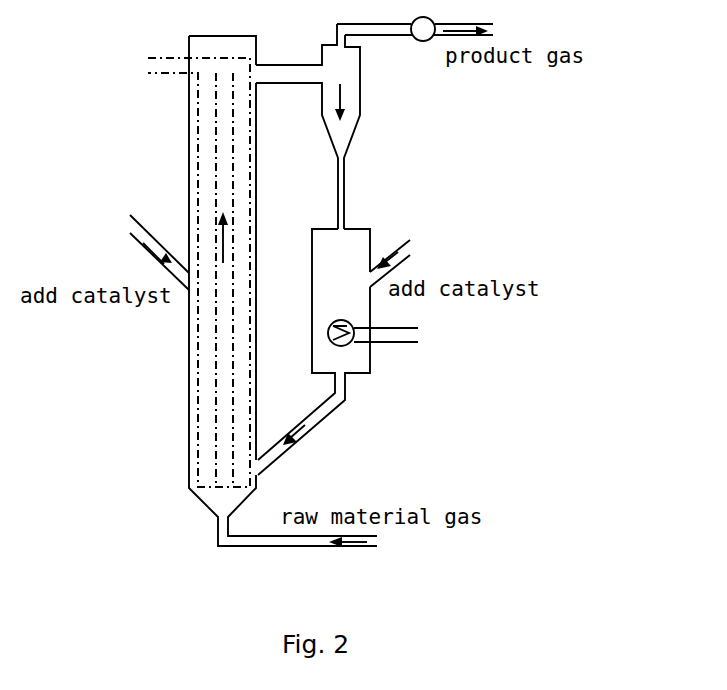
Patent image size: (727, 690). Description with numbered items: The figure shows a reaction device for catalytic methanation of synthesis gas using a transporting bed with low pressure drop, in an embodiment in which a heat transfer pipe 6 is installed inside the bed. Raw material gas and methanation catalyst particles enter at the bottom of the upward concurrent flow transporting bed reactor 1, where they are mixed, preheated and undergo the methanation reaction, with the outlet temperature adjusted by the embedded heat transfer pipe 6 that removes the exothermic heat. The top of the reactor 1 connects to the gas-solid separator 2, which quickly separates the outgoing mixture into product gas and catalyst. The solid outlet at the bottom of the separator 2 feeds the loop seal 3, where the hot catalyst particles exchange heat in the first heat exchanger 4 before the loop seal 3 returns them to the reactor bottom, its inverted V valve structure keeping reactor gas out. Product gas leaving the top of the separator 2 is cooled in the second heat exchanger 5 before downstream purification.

The upward concurrent flow transporting bed reactor 1 is at (189, 330).
The gas-solid separator 2 is at (335, 80).
The loop seal 3 is at (334, 352).
The first heat exchanger 4 is at (385, 343).
The second heat exchanger 5 is at (415, 44).
The heat transfer pipe 6 is at (200, 83).